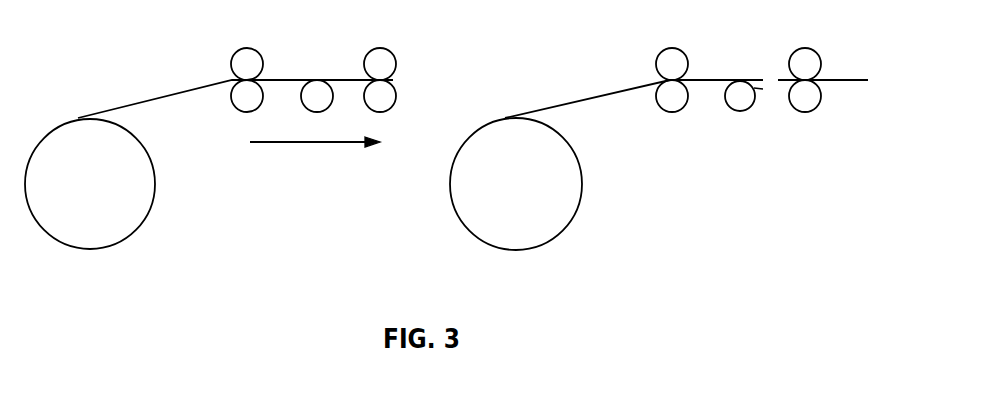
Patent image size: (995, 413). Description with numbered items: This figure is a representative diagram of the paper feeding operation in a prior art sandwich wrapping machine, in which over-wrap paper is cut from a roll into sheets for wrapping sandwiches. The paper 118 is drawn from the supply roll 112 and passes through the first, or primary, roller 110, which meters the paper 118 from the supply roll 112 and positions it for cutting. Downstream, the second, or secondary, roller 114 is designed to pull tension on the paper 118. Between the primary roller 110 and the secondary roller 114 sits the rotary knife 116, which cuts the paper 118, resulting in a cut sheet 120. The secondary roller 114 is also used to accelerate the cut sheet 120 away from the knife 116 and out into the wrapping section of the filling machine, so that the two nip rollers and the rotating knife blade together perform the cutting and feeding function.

The primary roller 110 is at (248, 48).
The supply roll 112 is at (88, 249).
The secondary roller 114 is at (380, 48).
The rotary knife 116 is at (314, 112).
The paper 118 is at (157, 100).
The cut sheet 120 is at (833, 78).